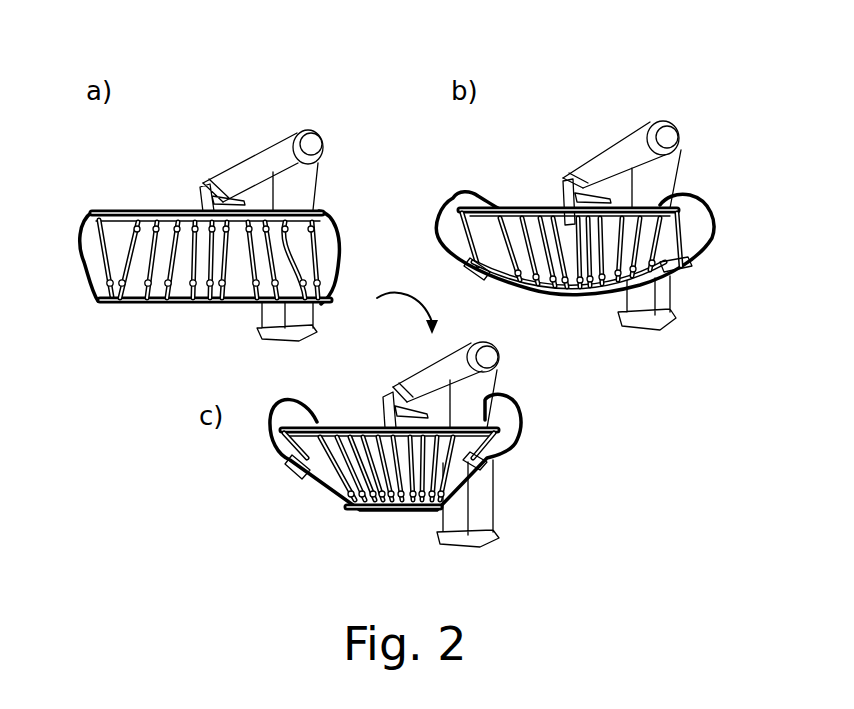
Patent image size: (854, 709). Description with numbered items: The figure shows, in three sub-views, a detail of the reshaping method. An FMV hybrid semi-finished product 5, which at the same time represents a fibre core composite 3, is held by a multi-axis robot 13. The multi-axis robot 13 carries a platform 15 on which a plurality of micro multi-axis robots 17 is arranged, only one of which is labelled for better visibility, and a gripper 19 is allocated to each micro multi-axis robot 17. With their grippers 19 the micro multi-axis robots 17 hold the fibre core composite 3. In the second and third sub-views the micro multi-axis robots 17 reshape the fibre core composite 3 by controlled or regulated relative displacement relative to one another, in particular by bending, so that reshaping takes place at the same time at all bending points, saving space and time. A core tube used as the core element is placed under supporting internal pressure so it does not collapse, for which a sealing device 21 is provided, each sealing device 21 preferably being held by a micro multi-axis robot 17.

The multi-axis robot 13 is at (231, 125).
The platform 15 is at (182, 210).
The micro multi-axis robot 17 is at (120, 252).
The gripper 19 is at (135, 303).
The fibre core composite 3 is at (383, 359).
The FMV hybrid semi-finished product 5 is at (237, 305).
The sealing device 21 is at (298, 466).